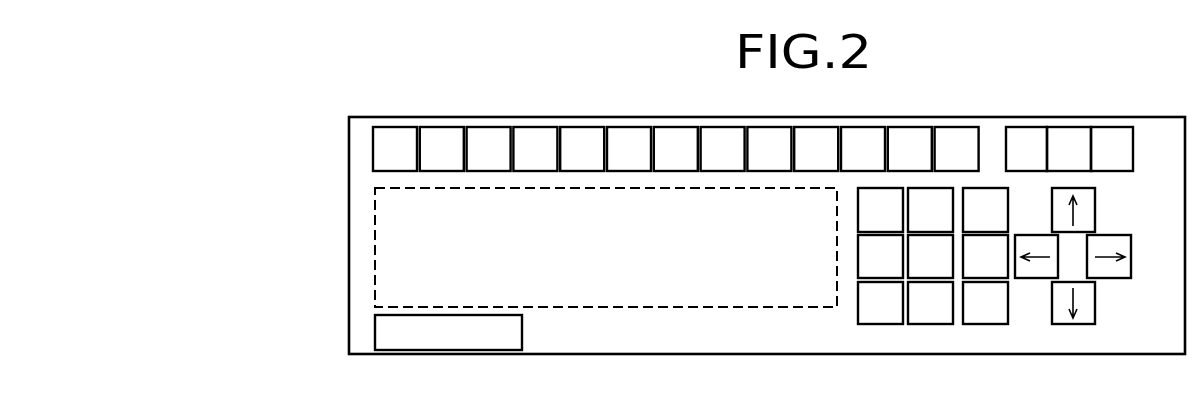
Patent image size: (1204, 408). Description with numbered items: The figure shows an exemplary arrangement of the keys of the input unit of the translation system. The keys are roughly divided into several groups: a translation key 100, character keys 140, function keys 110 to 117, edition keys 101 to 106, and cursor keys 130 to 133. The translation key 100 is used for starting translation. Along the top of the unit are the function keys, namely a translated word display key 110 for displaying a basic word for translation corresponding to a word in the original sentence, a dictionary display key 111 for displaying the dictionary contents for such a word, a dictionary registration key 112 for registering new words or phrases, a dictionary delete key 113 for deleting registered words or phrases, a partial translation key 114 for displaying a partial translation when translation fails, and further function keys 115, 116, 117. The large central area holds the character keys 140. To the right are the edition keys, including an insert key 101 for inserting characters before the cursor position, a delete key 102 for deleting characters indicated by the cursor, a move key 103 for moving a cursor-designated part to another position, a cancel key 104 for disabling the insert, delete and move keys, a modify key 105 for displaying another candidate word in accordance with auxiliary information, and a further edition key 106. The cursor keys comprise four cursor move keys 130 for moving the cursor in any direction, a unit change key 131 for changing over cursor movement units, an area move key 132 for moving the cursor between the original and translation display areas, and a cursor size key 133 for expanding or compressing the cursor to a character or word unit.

The translation key 100 is at (428, 354).
The insert key 101 is at (878, 325).
The delete key 102 is at (858, 243).
The move key 103 is at (880, 189).
The cancel key 104 is at (931, 325).
The modify key 105 is at (953, 278).
The edition key 106 is at (929, 189).
The translated word display key 110 is at (398, 130).
The dictionary display key 111 is at (446, 130).
The dictionary registration key 112 is at (491, 130).
The dictionary delete key 113 is at (540, 130).
The partial translation key 114 is at (585, 130).
The function key 115 is at (631, 130).
The function key 116 is at (677, 130).
The function key 117 is at (723, 130).
The cursor move keys 130 is at (1076, 350).
The unit change key 131 is at (1020, 130).
The area move key 132 is at (1066, 130).
The cursor size key 133 is at (1111, 130).
The character keys 140 is at (782, 295).